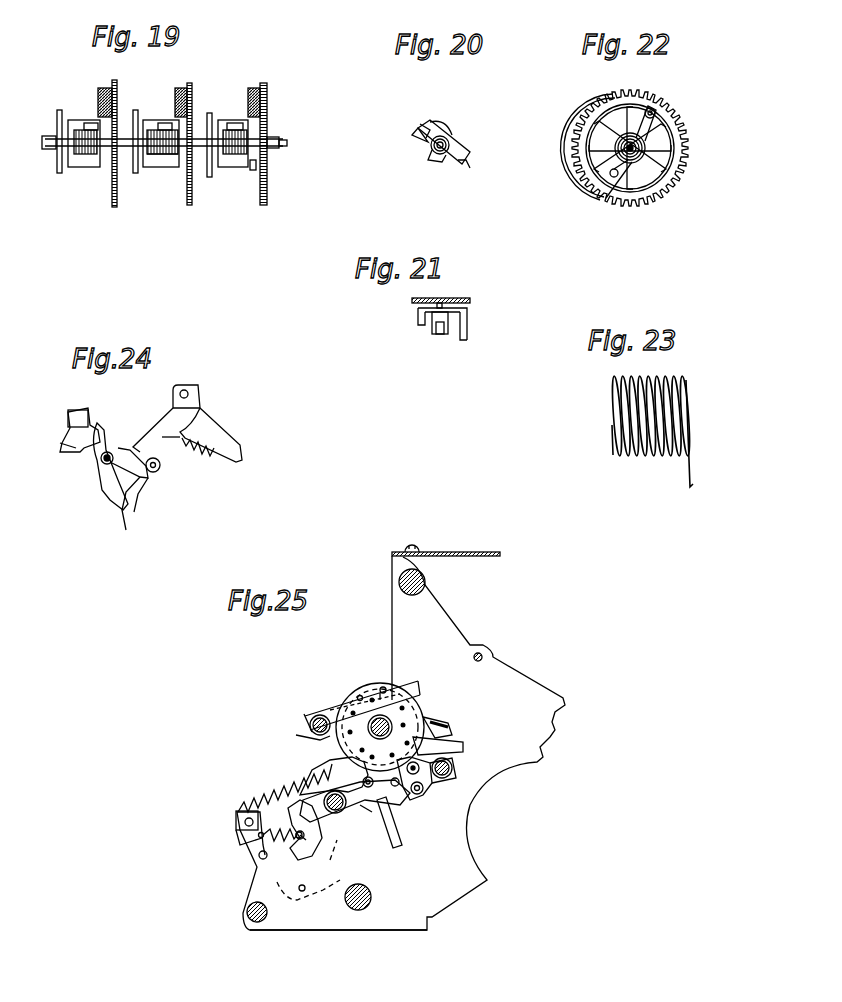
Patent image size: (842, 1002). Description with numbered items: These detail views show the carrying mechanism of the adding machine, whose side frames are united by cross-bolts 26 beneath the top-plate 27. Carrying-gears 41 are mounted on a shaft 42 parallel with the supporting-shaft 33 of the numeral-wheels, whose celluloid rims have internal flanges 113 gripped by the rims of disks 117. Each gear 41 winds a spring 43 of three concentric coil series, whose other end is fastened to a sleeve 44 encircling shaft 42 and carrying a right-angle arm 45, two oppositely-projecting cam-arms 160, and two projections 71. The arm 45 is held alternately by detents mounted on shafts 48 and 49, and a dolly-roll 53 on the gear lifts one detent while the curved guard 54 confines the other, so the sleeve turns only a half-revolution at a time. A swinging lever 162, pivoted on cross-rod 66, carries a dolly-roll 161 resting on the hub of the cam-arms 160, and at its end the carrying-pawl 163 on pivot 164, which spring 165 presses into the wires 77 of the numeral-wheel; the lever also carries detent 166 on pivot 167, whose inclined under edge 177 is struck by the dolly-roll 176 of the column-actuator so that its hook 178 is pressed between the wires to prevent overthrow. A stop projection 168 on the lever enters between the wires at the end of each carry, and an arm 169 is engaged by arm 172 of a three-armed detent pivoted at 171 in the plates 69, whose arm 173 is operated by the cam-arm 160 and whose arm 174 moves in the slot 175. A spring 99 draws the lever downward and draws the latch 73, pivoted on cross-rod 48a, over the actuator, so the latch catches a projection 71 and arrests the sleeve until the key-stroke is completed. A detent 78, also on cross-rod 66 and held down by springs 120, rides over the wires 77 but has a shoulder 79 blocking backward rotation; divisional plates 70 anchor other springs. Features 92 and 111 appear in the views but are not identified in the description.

In FIG. 25, the cross-bolts 26 is at (426, 582).
In FIG. 25, the top-plate 27 is at (490, 552).
In FIG. 25, the supporting-shaft 33 is at (348, 700).
In FIG. 19, the carrying-gears 41 is at (113, 190).
In FIG. 22, the carrying-gears 41 is at (686, 172).
In FIG. 19, the shaft 42 is at (123, 160).
In FIG. 22, the shaft 42 is at (640, 145).
In FIG. 19, the spring 43 is at (170, 160).
In FIG. 20, the spring 43 is at (432, 155).
In FIG. 22, the spring 43 is at (630, 160).
In FIG. 23, the spring 43 is at (692, 424).
In FIG. 20, the sleeve 44 is at (448, 142).
In FIG. 22, the sleeve 44 is at (644, 148).
In FIG. 21, the sleeve 44 is at (436, 326).
In FIG. 19, the right-angle arm 45 is at (76, 133).
In FIG. 20, the right-angle arm 45 is at (468, 156).
In FIG. 21, the right-angle arm 45 is at (468, 330).
In FIG. 25, the shaft 48 is at (260, 858).
In FIG. 25, the cross-rod 48a is at (242, 836).
In FIG. 25, the shaft 49 is at (303, 892).
In FIG. 19, the dolly-roll 53 is at (251, 171).
In FIG. 22, the dolly-roll 53 is at (654, 112).
In FIG. 19, the curved guard 54 is at (100, 92).
In FIG. 22, the curved guard 54 is at (588, 150).
In FIG. 25, the cross-rod 66 is at (334, 690).
In FIG. 25, the plates 69 is at (300, 920).
In FIG. 25, the divisional plates 70 is at (401, 743).
In FIG. 19, the projections 71 is at (164, 123).
In FIG. 20, the projections 71 is at (428, 128).
In FIG. 21, the projections 71 is at (418, 320).
In FIG. 25, the latch 73 is at (238, 815).
In FIG. 25, the wires 77 is at (406, 716).
In FIG. 25, the detent 78 is at (366, 686).
In FIG. 25, the shoulder 79 is at (380, 686).
In FIG. 25, the hole 92 is at (484, 656).
In FIG. 24, the spring 99 is at (238, 460).
In FIG. 25, the spring 99 is at (248, 802).
In FIG. 25, the pawl 111 is at (312, 832).
In FIG. 25, the internal flanges 113 is at (380, 843).
In FIG. 25, the disks 117 is at (386, 686).
In FIG. 25, the springs 120 is at (316, 718).
In FIG. 19, the cam-arms 160 is at (59, 168).
In FIG. 20, the cam-arms 160 is at (470, 150).
In FIG. 21, the cam-arms 160 is at (470, 300).
In FIG. 25, the cam-arms 160 is at (424, 790).
In FIG. 24, the dolly-roll 161 is at (160, 470).
In FIG. 24, the swinging lever 162 is at (168, 454).
In FIG. 25, the swinging lever 162 is at (290, 734).
In FIG. 24, the carrying-pawl 163 is at (110, 432).
In FIG. 25, the carrying-pawl 163 is at (452, 772).
In FIG. 24, the pivot 164 is at (106, 466).
In FIG. 25, the pivot 164 is at (420, 772).
In FIG. 24, the spring 165 is at (126, 520).
In FIG. 25, the spring 165 is at (397, 820).
In FIG. 24, the detent 166 is at (66, 432).
In FIG. 25, the detent 166 is at (463, 746).
In FIG. 24, the pivot 167 is at (140, 478).
In FIG. 25, the pivot 167 is at (394, 792).
In FIG. 24, the stop projection 168 is at (177, 386).
In FIG. 25, the stop projection 168 is at (430, 766).
In FIG. 24, the arm 169 is at (214, 432).
In FIG. 25, the arm 169 is at (300, 778).
In FIG. 25, the pivot 171 is at (311, 848).
In FIG. 25, the arm 172 is at (300, 812).
In FIG. 25, the arm 173 is at (372, 814).
In FIG. 25, the arm 174 is at (270, 885).
In FIG. 25, the slot 175 is at (266, 860).
In FIG. 25, the dolly-roll 176 is at (452, 766).
In FIG. 24, the inclined under edge 177 is at (72, 450).
In FIG. 24, the hook 178 is at (90, 404).
In FIG. 25, the hook 178 is at (446, 720).